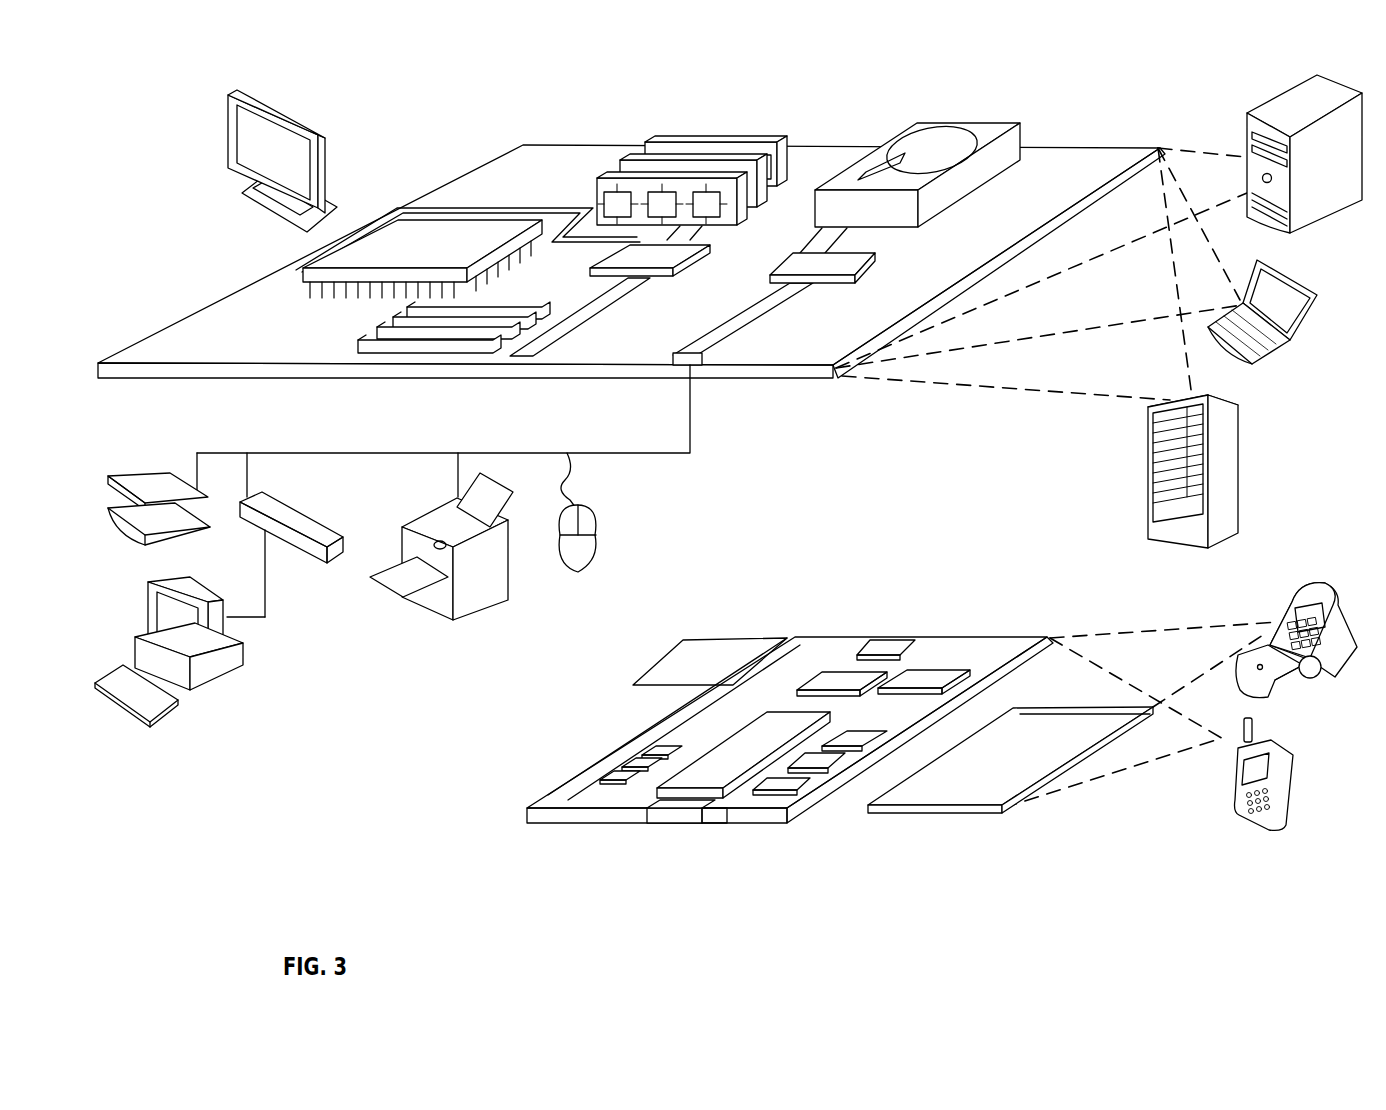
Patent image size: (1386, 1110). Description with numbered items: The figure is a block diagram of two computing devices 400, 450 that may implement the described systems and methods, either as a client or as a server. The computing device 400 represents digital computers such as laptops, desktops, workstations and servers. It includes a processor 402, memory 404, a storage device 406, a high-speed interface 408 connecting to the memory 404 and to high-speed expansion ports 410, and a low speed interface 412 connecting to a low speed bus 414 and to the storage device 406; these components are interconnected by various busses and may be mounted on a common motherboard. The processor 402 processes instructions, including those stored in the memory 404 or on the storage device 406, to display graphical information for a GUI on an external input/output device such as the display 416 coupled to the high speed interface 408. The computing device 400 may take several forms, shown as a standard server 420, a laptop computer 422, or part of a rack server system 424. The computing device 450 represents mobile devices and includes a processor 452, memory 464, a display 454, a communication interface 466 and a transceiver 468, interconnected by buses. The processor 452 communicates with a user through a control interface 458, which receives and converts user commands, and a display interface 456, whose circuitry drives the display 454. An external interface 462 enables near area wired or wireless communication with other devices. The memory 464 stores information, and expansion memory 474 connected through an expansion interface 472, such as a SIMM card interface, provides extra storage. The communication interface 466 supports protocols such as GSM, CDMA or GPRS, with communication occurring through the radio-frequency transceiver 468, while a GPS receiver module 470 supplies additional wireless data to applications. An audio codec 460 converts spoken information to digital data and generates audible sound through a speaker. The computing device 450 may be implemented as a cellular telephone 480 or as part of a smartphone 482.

The computing device 400 is at (438, 112).
The processor 402 is at (290, 283).
The memory 404 is at (658, 142).
The storage device 406 is at (908, 126).
The high-speed interface 408 is at (623, 253).
The high-speed expansion ports 410 is at (370, 337).
The low speed interface 412 is at (803, 262).
The low speed bus 414 is at (700, 368).
The display 416 is at (228, 92).
The standard server 420 is at (1247, 131).
The laptop computer 422 is at (1316, 291).
The rack server system 424 is at (1148, 452).
The computing device 450 is at (495, 828).
The processor 452 is at (713, 777).
The display 454 is at (965, 792).
The display interface 456 is at (787, 780).
The control interface 458 is at (820, 760).
The audio codec 460 is at (850, 740).
The external interface 462 is at (677, 813).
The memory 464 is at (620, 763).
The communication interface 466 is at (842, 677).
The transceiver 468 is at (923, 677).
The GPS receiver module 470 is at (895, 640).
The expansion interface 472 is at (765, 652).
The expansion memory 474 is at (683, 652).
The cellular telephone 480 is at (1297, 590).
The smartphone 482 is at (1236, 770).